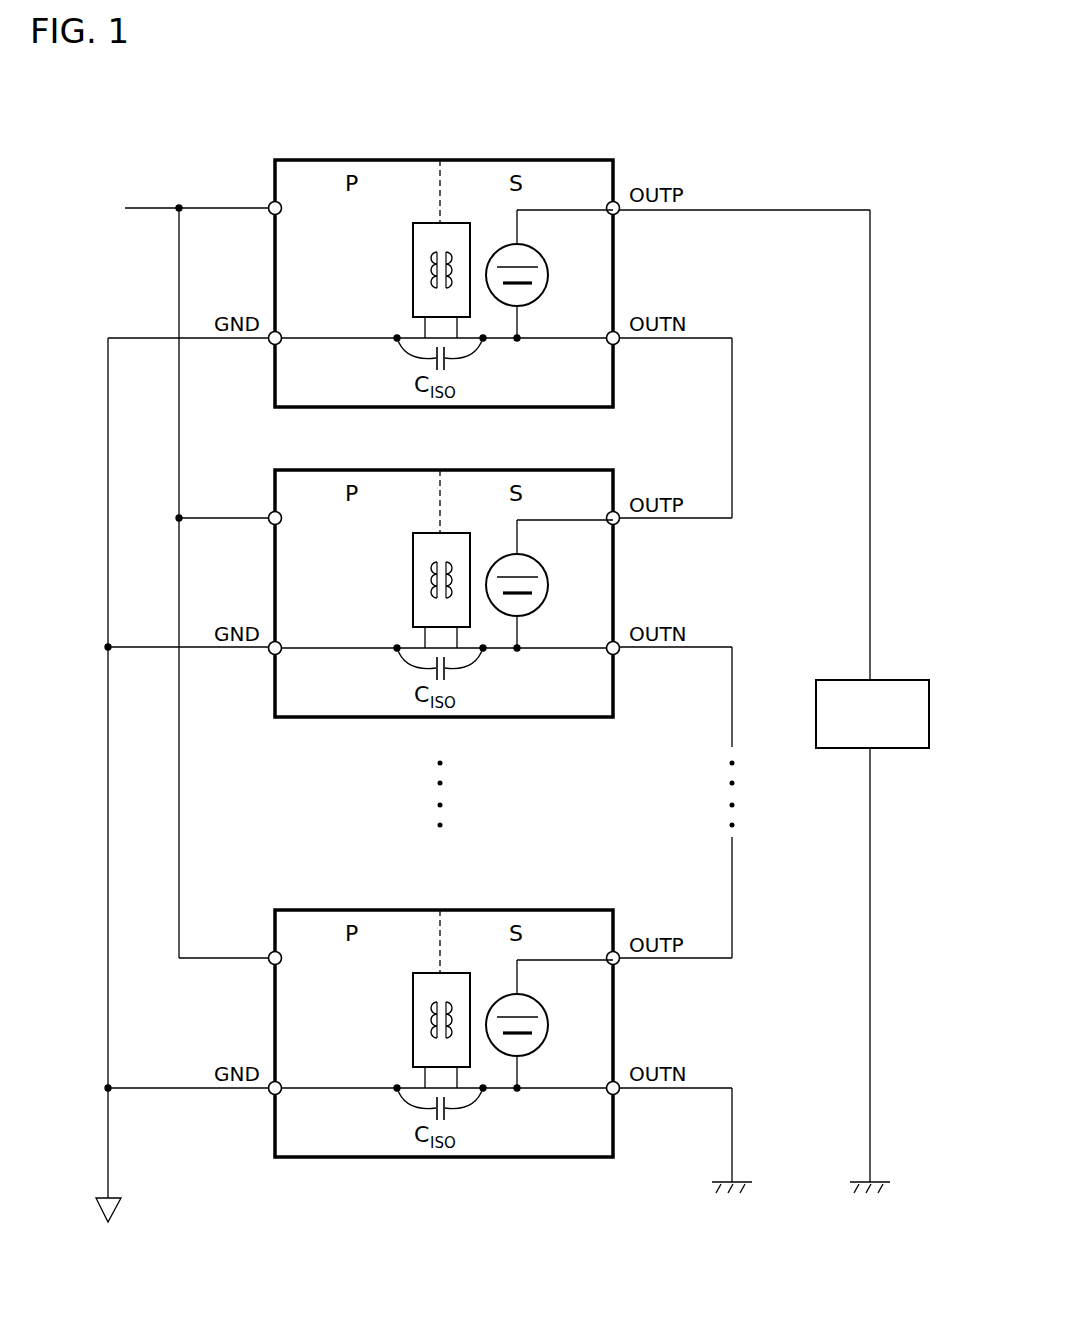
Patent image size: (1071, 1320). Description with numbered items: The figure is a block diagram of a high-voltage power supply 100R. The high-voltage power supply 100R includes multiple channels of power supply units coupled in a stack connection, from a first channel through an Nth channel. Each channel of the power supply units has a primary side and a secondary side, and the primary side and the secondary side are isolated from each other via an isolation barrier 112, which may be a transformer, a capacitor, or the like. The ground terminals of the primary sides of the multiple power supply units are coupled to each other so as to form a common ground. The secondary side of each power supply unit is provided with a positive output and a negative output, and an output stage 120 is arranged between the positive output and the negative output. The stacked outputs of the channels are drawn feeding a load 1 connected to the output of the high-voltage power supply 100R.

The high-voltage power supply 100R is at (899, 96).
The isolation barrier 112 is at (413, 268).
The output stage 120 is at (546, 254).
The load 1 is at (895, 680).